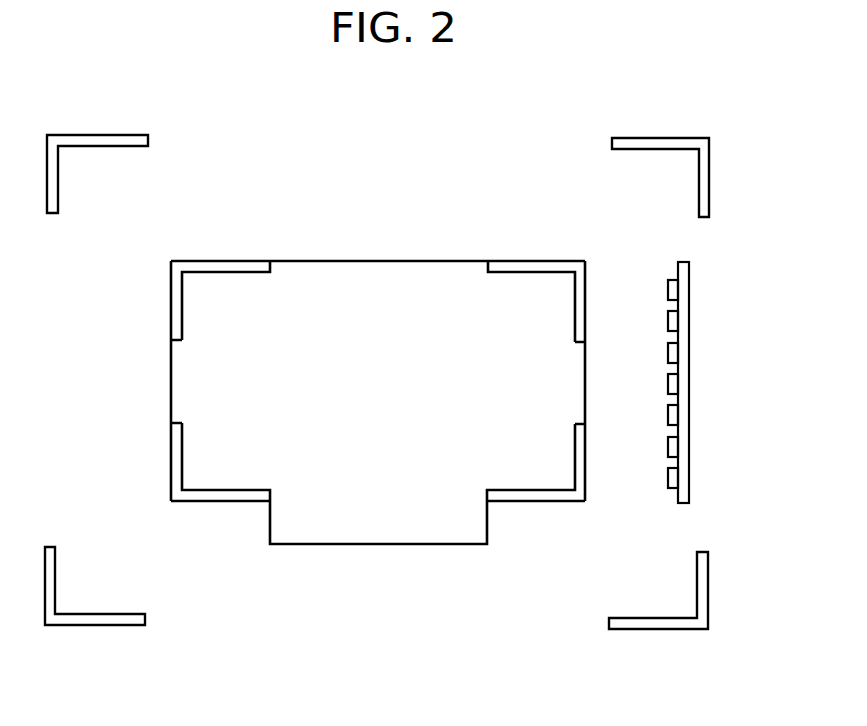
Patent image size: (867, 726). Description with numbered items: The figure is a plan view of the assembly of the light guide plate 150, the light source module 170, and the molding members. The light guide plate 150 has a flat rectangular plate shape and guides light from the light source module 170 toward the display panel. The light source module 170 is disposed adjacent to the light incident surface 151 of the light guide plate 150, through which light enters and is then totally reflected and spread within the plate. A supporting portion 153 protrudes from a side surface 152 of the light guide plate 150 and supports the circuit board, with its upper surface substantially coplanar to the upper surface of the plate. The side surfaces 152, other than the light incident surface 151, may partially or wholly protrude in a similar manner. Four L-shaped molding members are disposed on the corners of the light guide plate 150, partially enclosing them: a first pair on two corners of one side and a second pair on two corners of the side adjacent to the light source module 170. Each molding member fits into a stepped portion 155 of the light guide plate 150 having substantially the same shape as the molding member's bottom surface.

The light guide plate 150 is at (370, 268).
The light incident surface 151 is at (585, 378).
The side surface 152 is at (548, 502).
The supporting portion 153 is at (372, 545).
The stepped portion 155 is at (175, 445).
The light source module 170 is at (684, 390).